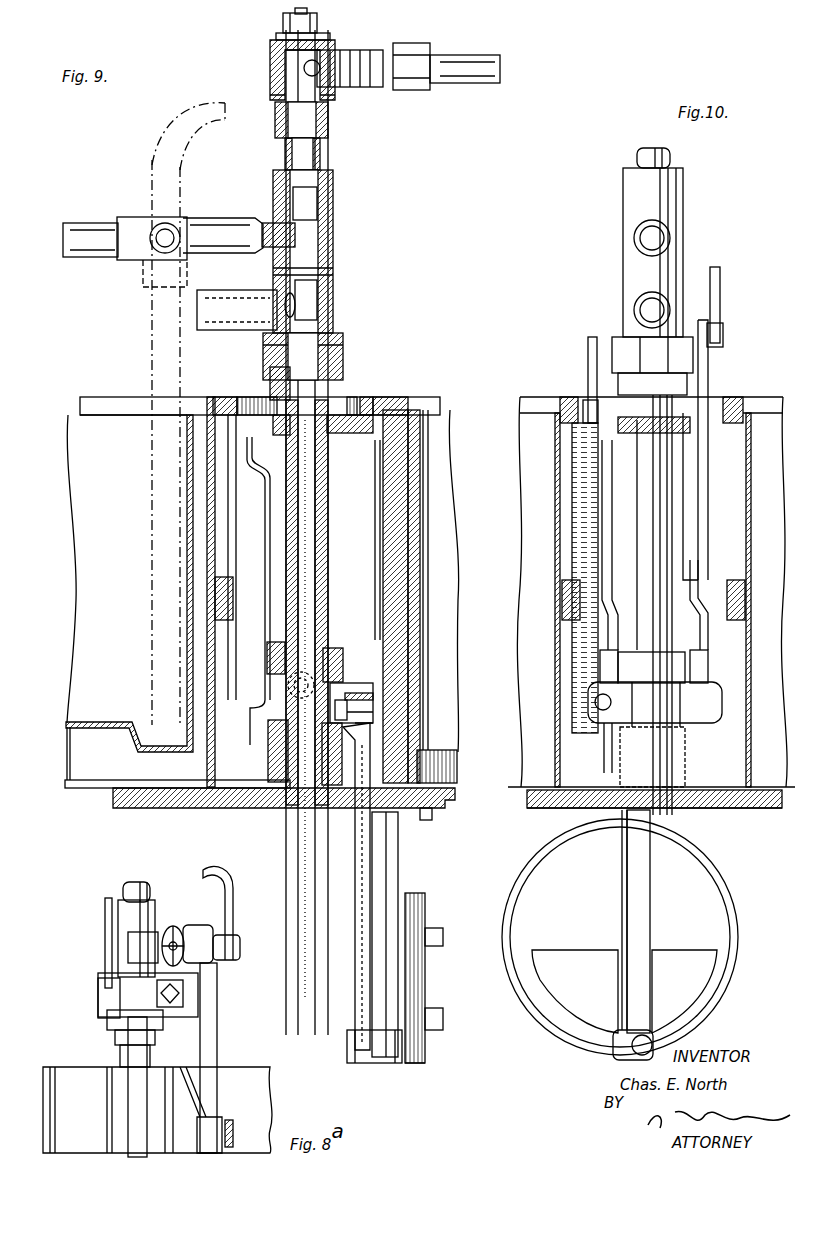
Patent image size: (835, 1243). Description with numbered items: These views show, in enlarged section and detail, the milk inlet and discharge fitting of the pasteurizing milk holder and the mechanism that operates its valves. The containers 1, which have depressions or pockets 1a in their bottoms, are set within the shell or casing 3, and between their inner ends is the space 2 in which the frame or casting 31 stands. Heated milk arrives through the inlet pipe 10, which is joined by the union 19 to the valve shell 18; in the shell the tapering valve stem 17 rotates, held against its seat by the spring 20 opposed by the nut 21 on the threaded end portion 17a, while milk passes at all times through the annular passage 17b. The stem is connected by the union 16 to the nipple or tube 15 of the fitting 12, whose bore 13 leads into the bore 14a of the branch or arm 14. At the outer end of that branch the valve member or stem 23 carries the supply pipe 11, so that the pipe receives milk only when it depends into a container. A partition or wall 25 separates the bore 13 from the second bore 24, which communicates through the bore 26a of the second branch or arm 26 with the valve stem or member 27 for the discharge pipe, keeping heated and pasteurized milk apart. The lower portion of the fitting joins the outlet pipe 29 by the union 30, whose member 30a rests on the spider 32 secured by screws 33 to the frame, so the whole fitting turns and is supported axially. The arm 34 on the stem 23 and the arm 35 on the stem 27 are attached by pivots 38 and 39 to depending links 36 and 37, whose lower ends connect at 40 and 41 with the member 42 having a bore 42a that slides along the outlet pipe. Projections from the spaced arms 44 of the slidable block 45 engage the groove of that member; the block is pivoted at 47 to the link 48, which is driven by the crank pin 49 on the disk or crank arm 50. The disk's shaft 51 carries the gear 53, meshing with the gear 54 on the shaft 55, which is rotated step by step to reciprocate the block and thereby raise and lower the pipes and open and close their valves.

In FIG. 9, the container 1 is at (262, 596).
In FIG. 8a, the container 1 is at (72, 1092).
In FIG. 10, the container 1 is at (651, 592).
In FIG. 9, the depression or pocket 1a is at (165, 788).
In FIG. 9, the space 2 is at (307, 592).
In FIG. 10, the space 2 is at (653, 592).
In FIG. 9, the shell or casing 3 is at (274, 771).
In FIG. 10, the shell or casing 3 is at (654, 777).
In FIG. 9, the inlet pipe 10 is at (470, 83).
In FIG. 9, the supply pipe 11 is at (90, 230).
In FIG. 8a, the supply pipe 11 is at (217, 1018).
In FIG. 9, the fitting 12 is at (333, 222).
In FIG. 8a, the fitting 12 is at (155, 912).
In FIG. 10, the fitting 12 is at (623, 202).
In FIG. 9, the bore 13 is at (310, 200).
In FIG. 9, the branch or arm 14 is at (230, 218).
In FIG. 10, the branch or arm 14 is at (668, 232).
In FIG. 9, the bore 14a is at (295, 240).
In FIG. 10, the bore 14a is at (650, 242).
In FIG. 9, the nipple or tube 15 is at (320, 150).
In FIG. 8a, the nipple or tube 15 is at (123, 889).
In FIG. 10, the nipple or tube 15 is at (637, 160).
In FIG. 9, the union 16 is at (330, 118).
In FIG. 9, the valve stem 17 is at (275, 92).
In FIG. 9, the threaded end portion 17a is at (307, 10).
In FIG. 9, the annular passage 17b is at (312, 66).
In FIG. 9, the valve shell 18 is at (270, 62).
In FIG. 9, the union 19 is at (412, 43).
In FIG. 9, the spring 20 is at (276, 40).
In FIG. 9, the nut 21 is at (283, 22).
In FIG. 9, the valve member or stem 23 is at (165, 238).
In FIG. 9, the second bore 24 is at (317, 302).
In FIG. 9, the partition or wall 25 is at (333, 272).
In FIG. 9, the second branch or arm 26 is at (222, 330).
In FIG. 10, the second branch or arm 26 is at (634, 312).
In FIG. 9, the bore 26a is at (295, 318).
In FIG. 10, the bore 26a is at (653, 310).
In FIG. 8a, the valve stem or member 27 is at (110, 1000).
In FIG. 9, the outlet pipe 29 is at (320, 462).
In FIG. 8a, the outlet pipe 29 is at (147, 1058).
In FIG. 10, the outlet pipe 29 is at (648, 548).
In FIG. 9, the union 30 is at (343, 362).
In FIG. 9, the union member 30a is at (270, 382).
In FIG. 9, the frame or casting 31 is at (404, 408).
In FIG. 9, the spider 32 is at (350, 412).
In FIG. 10, the spider 32 is at (690, 420).
In FIG. 9, the screws 33 is at (372, 410).
In FIG. 9, the arm 34 is at (189, 414).
In FIG. 8a, the arm 34 is at (233, 895).
In FIG. 10, the arm 34 is at (720, 285).
In FIG. 8a, the arm 35 is at (105, 938).
In FIG. 10, the arm 35 is at (588, 340).
In FIG. 10, the link 36 is at (708, 372).
In FIG. 10, the link 37 is at (605, 508).
In FIG. 10, the pivot 38 is at (723, 335).
In FIG. 10, the pivot 39 is at (588, 405).
In FIG. 10, the pivotal connection 40 is at (712, 665).
In FIG. 10, the pivotal connection 41 is at (600, 664).
In FIG. 9, the member 42 is at (330, 648).
In FIG. 10, the member 42 is at (651, 667).
In FIG. 9, the bore 42a is at (325, 668).
In FIG. 10, the bore 42a is at (646, 700).
In FIG. 10, the arms 44 is at (540, 812).
In FIG. 9, the slidable block 45 is at (428, 820).
In FIG. 9, the pivotal connection 47 is at (372, 690).
In FIG. 9, the link 48 is at (355, 890).
In FIG. 10, the link 48 is at (650, 845).
In FIG. 9, the crank pin 49 is at (350, 1055).
In FIG. 10, the crank pin 49 is at (615, 1050).
In FIG. 9, the disk or crank arm 50 is at (398, 880).
In FIG. 10, the disk or crank arm 50 is at (712, 898).
In FIG. 9, the shaft 51 is at (440, 932).
In FIG. 9, the gear 53 is at (425, 900).
In FIG. 9, the gear 54 is at (420, 1063).
In FIG. 9, the shaft 55 is at (440, 1012).